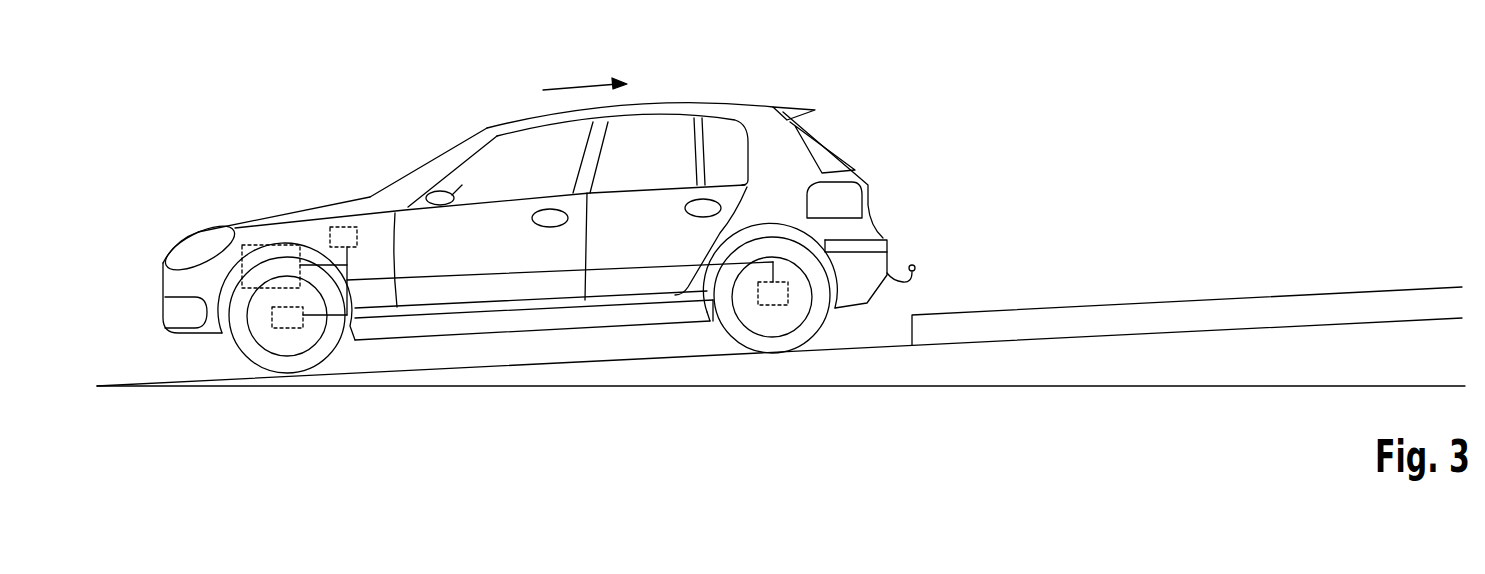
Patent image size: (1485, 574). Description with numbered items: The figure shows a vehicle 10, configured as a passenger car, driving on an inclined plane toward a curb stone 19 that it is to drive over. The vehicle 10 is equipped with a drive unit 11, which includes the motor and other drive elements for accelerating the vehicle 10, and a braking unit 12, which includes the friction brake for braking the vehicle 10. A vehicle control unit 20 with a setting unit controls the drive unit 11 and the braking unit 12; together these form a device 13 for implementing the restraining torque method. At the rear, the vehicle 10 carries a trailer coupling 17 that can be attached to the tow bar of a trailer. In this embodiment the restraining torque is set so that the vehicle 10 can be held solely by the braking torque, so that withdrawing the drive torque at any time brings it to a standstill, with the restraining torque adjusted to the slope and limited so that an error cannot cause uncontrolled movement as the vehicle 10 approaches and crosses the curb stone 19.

The vehicle 10 is at (730, 85).
The drive unit 11 is at (260, 252).
The braking unit 12 is at (287, 320).
The device 13 is at (238, 206).
The trailer coupling 17 is at (913, 264).
The curb stone 19 is at (1038, 317).
The vehicle control unit 20 is at (340, 230).